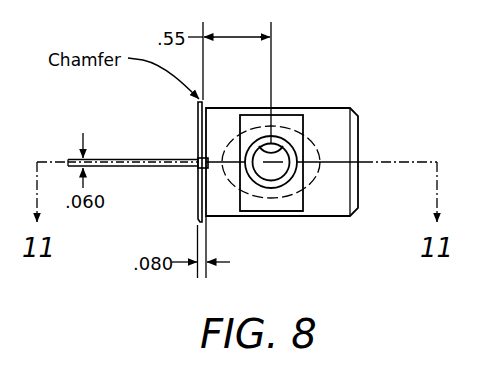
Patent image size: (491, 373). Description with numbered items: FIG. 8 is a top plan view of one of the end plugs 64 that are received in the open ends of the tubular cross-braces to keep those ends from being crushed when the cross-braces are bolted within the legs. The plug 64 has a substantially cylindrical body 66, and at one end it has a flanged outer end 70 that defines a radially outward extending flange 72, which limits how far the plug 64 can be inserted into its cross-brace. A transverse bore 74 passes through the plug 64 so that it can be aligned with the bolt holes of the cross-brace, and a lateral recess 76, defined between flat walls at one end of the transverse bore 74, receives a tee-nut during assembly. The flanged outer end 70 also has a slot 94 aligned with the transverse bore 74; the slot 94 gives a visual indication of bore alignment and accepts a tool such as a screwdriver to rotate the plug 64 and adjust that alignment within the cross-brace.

The plug 64 is at (432, 60).
The cylindrical body 66 is at (321, 116).
The flanged outer end 70 is at (197, 133).
The flange 72 is at (204, 101).
The transverse bore 74 is at (273, 152).
The lateral recess 76 is at (249, 203).
The slot 94 is at (197, 165).